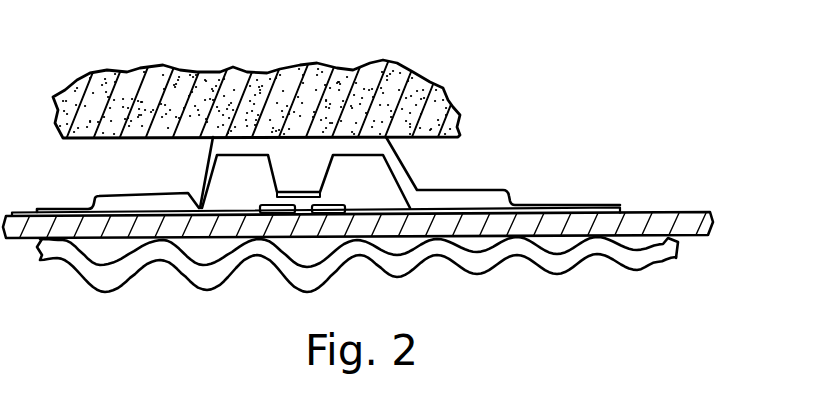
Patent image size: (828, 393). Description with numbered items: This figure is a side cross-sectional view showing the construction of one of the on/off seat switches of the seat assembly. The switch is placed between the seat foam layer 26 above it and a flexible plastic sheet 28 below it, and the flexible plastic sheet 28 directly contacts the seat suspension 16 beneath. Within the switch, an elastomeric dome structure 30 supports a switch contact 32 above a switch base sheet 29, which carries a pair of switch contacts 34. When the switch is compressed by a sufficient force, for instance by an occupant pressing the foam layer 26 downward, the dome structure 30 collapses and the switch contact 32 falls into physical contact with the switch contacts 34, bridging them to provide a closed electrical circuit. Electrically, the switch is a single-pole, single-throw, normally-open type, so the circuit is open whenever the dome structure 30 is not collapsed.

The seat suspension 16 is at (185, 268).
The seat foam layer 26 is at (392, 78).
The flexible plastic sheet 28 is at (466, 225).
The switch base sheet 29 is at (585, 212).
The elastomeric dome structure 30 is at (398, 168).
The switch contact 32 is at (292, 192).
The switch contacts 34 is at (308, 190).